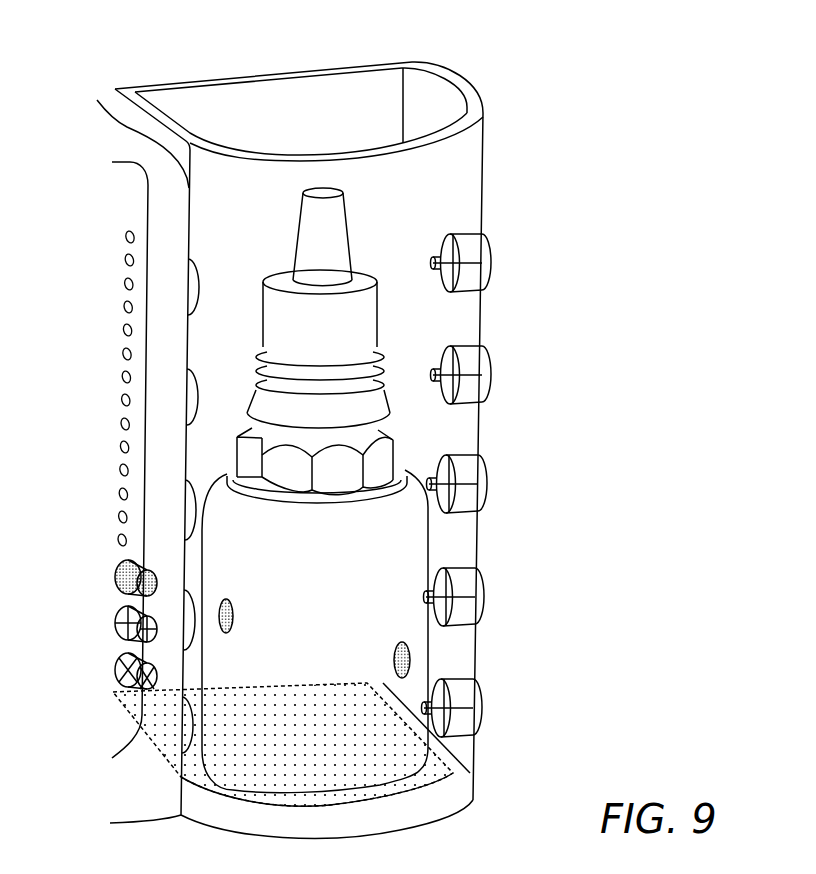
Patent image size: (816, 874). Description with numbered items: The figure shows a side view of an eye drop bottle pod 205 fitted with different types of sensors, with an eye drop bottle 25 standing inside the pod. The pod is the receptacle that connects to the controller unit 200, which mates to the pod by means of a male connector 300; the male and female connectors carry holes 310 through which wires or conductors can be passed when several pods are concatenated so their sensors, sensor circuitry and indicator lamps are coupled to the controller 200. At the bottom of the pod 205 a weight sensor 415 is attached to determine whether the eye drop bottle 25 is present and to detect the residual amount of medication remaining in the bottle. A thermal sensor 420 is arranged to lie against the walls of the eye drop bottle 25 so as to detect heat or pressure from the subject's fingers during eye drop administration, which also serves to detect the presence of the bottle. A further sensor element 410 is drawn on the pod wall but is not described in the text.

The eye drop bottle 25 is at (413, 533).
The controller unit 200 is at (97, 100).
The eye drop bottle pod 205 is at (247, 78).
The male connector 300 is at (488, 282).
The holes 310 is at (487, 263).
The sensor 410 is at (235, 616).
The weight sensor 415 is at (440, 792).
The thermal sensor 420 is at (410, 660).